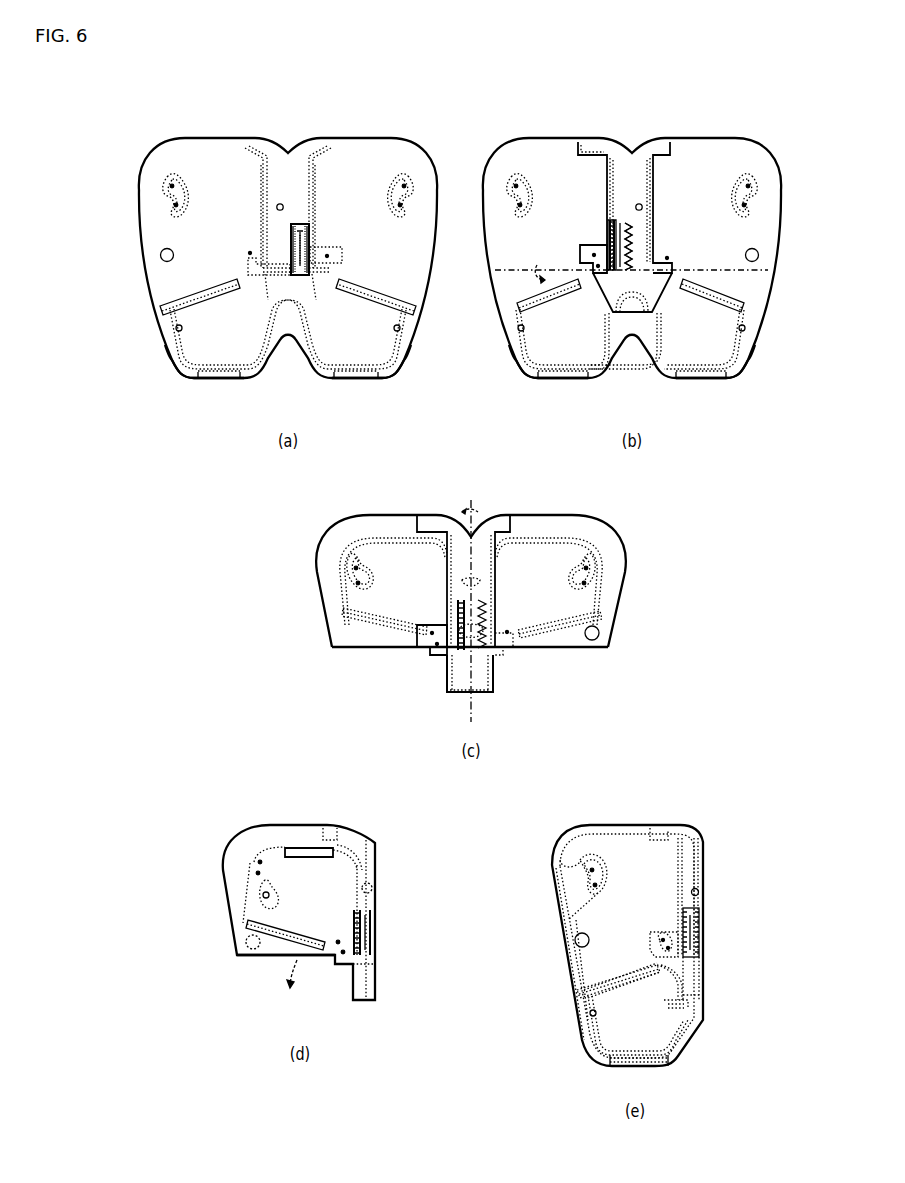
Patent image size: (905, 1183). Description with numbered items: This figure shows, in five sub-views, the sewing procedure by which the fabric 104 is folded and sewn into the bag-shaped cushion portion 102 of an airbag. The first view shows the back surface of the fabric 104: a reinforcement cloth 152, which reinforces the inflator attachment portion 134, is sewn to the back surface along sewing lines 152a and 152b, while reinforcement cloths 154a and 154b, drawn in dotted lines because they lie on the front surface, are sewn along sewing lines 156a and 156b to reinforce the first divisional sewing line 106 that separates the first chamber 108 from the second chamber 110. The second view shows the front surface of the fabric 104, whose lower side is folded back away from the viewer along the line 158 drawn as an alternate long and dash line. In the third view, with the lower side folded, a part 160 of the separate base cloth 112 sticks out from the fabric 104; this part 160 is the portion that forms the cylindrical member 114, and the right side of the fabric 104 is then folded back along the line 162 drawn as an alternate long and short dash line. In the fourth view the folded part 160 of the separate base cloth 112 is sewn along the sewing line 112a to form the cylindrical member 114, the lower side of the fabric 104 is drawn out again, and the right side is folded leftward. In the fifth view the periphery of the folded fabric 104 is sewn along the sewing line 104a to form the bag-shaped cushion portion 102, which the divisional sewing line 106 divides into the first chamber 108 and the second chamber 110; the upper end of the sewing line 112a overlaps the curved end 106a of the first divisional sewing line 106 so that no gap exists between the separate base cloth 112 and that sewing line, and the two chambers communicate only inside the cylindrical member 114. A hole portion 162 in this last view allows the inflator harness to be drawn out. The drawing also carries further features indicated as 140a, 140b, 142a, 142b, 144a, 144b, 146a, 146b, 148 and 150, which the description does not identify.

The cushion portion 102 is at (673, 815).
The fabric 104 is at (166, 140).
The sewing line 104a is at (555, 893).
The first divisional sewing line 106 is at (612, 978).
The end of the first divisional sewing line 106a is at (661, 935).
The first chamber 108 is at (600, 1035).
The second chamber 110 is at (578, 972).
The separate base cloth 112 is at (276, 160).
The sewing line 112a is at (684, 988).
The cylindrical member 114 is at (700, 968).
The inflator attachment portion 134 is at (290, 240).
The right lobe 140a is at (413, 345).
The left lobe 140b is at (172, 368).
The right bottom portion 142a is at (355, 378).
The left bottom portion 142b is at (214, 378).
The right inner wall 144a is at (388, 355).
The left inner wall 144b is at (186, 355).
The right channel wall 146a is at (310, 190).
The left channel wall 146b is at (264, 188).
The engaging block 148 is at (343, 252).
The support flange 150 is at (276, 260).
The reinforcement cloth 152 is at (312, 232).
The sewing line 152a is at (312, 278).
The sewing line 152b is at (278, 278).
The reinforcement cloth 154a is at (378, 298).
The reinforcement cloth 154b is at (210, 298).
The sewing line 156a is at (370, 300).
The sewing line 156b is at (205, 300).
The line 158 is at (508, 266).
The part of the separate base cloth 160 is at (450, 680).
The line 162 is at (470, 712).